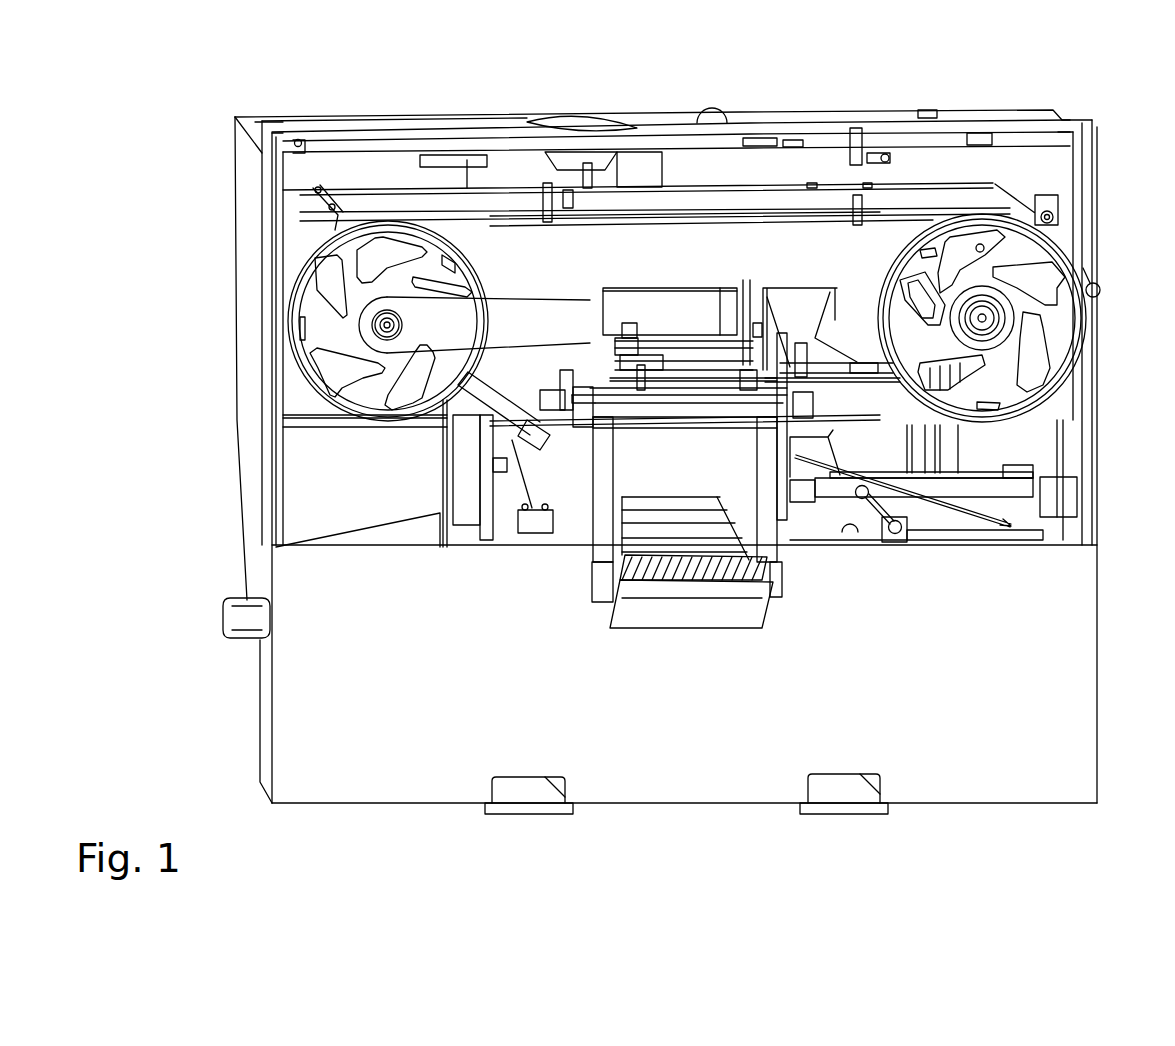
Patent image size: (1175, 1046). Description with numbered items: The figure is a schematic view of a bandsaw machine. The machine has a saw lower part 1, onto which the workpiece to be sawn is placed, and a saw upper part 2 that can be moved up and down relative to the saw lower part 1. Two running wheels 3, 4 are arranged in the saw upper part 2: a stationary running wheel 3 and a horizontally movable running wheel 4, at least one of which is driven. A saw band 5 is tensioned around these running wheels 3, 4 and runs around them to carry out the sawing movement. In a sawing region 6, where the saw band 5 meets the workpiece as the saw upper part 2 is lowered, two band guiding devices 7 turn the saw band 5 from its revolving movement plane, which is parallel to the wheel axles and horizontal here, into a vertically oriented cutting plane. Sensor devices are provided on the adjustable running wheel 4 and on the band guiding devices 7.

The saw lower part 1 is at (1003, 690).
The saw upper part 2 is at (642, 162).
The stationary running wheel 3 is at (1018, 252).
The horizontally movable running wheel 4 is at (357, 257).
The saw band 5 is at (431, 221).
The sawing region 6 is at (675, 423).
The band guiding device 7 is at (580, 398).